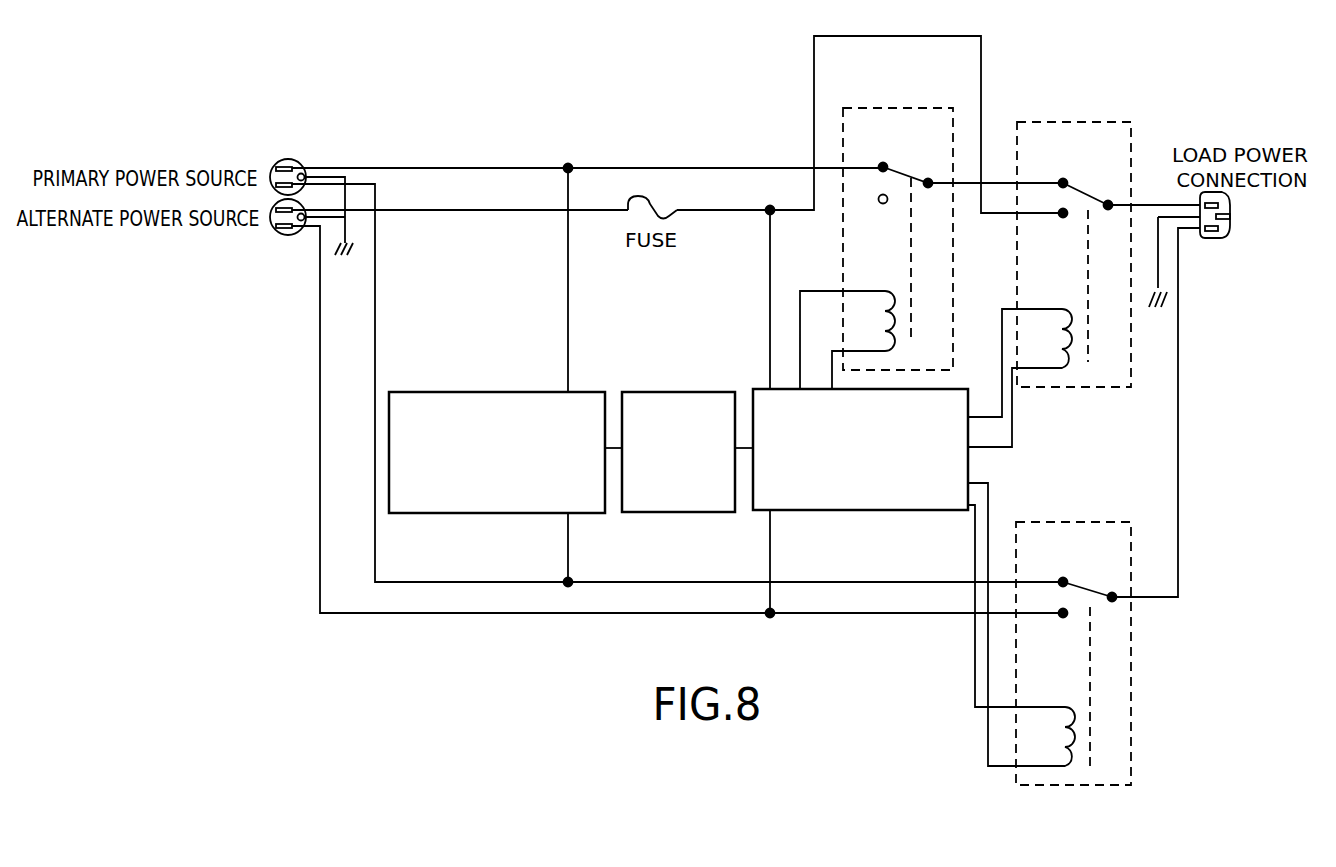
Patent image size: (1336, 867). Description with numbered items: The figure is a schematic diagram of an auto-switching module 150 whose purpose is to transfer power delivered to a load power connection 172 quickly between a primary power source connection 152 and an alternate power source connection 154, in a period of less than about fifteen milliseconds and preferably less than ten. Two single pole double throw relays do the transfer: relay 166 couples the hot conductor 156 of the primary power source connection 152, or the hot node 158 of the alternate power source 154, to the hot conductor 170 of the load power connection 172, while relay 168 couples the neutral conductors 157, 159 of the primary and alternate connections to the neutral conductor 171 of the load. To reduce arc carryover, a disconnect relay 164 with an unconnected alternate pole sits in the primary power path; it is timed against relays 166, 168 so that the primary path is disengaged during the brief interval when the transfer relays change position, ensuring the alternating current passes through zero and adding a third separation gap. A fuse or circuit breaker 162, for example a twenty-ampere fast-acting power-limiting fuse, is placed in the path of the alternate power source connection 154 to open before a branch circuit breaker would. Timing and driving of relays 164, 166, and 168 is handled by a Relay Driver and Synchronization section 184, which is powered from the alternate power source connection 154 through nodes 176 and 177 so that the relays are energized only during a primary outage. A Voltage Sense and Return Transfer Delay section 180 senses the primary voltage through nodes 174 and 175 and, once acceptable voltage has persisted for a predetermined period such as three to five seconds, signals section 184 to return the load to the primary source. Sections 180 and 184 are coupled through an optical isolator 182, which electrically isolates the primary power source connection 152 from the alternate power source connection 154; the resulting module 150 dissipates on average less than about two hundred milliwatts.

The auto-switching module 150 is at (301, 621).
The primary power source connection 152 is at (281, 162).
The alternate power source connection 154 is at (276, 233).
The hot conductor 156 is at (470, 168).
The neutral conductor 157 is at (375, 412).
The hot node 158 is at (422, 210).
The neutral conductor 159 is at (320, 382).
The fuse or circuit breaker 162 is at (663, 218).
The disconnect relay 164 is at (955, 125).
The SPDT relay 166 is at (1132, 128).
The SPDT relay 168 is at (1131, 733).
The hot conductor 170 is at (1142, 205).
The neutral conductor 171 is at (1178, 478).
The load power connection 172 is at (1225, 238).
The node 174 is at (568, 306).
The node 175 is at (567, 545).
The node 176 is at (770, 548).
The node 177 is at (770, 306).
The Voltage Sense and Return Transfer Delay section 180 is at (565, 506).
The optical isolator 182 is at (693, 506).
The Relay Driver and Synchronization section 184 is at (927, 501).